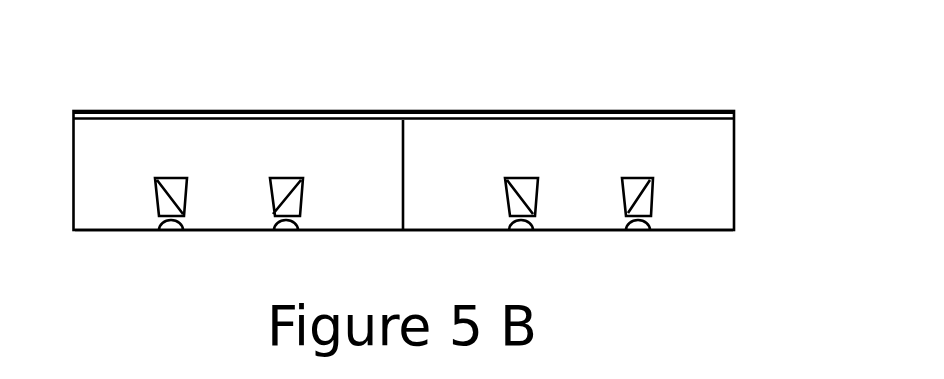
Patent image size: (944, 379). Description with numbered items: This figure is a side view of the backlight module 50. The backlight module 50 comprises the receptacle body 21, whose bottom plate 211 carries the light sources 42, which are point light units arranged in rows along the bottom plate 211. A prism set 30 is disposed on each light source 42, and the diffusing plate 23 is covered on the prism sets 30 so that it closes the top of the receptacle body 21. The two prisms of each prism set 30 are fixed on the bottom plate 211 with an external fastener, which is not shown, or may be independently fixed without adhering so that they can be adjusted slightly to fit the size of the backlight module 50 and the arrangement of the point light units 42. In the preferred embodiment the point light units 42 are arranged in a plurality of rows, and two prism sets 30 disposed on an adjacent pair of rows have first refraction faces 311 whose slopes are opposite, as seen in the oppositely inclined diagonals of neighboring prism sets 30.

The backlight module 50 is at (744, 74).
The receptacle body 21 is at (735, 213).
The bottom plate 211 is at (456, 228).
The diffusing plate 23 is at (736, 115).
The prism set 30 is at (623, 198).
The first refraction face 311 is at (290, 186).
The light source 42 is at (637, 233).